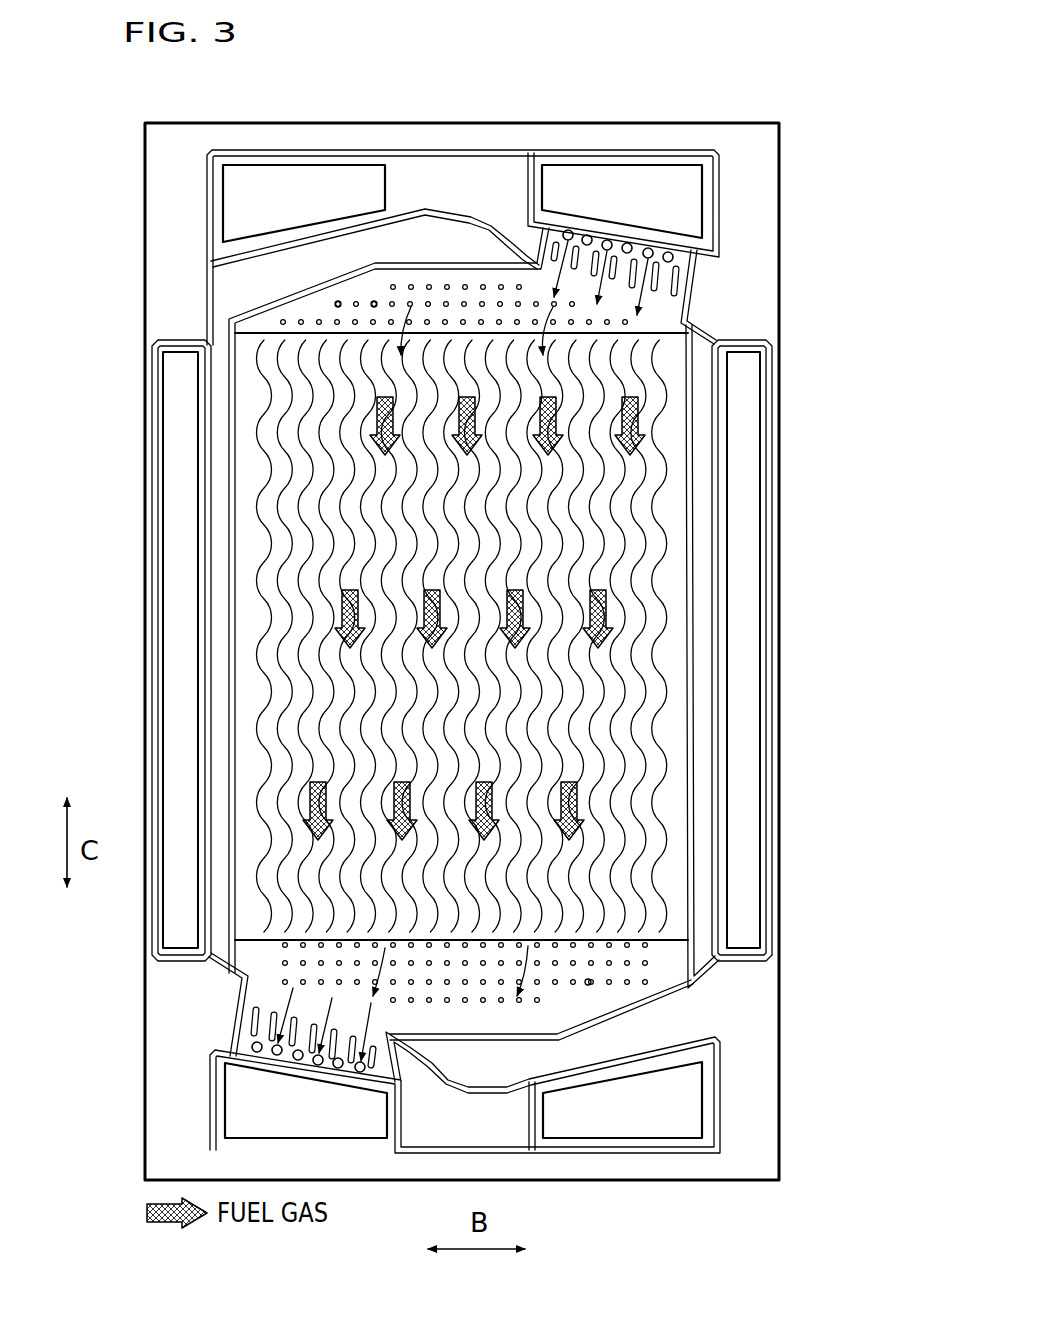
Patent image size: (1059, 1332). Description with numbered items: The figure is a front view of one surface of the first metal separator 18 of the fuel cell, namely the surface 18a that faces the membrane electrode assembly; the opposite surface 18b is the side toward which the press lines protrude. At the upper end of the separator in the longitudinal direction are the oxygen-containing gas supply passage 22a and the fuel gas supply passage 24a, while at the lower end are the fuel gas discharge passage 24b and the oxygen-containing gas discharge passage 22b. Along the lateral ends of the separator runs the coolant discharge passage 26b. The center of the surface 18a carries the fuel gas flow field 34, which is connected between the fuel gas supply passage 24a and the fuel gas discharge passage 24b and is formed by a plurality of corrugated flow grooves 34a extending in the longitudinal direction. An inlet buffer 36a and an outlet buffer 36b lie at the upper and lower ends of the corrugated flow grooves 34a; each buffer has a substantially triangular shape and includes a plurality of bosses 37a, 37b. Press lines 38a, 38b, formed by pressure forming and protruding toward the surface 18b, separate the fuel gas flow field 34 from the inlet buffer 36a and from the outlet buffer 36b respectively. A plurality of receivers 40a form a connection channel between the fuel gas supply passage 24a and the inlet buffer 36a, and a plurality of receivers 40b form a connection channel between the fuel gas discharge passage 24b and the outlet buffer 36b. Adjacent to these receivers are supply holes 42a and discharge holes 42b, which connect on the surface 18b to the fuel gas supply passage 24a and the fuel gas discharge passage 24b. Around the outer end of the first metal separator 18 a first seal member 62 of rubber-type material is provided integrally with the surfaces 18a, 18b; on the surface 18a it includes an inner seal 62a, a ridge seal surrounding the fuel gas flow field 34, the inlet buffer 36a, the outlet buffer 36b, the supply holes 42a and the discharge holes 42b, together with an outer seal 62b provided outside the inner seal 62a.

The first metal separator 18 is at (693, 63).
The surface 18a is at (743, 1083).
The surface 18b is at (742, 1120).
The oxygen-containing gas supply passage 22a is at (304, 203).
The oxygen-containing gas discharge passage 22b is at (622, 1100).
The fuel gas supply passage 24a is at (622, 201).
The fuel gas discharge passage 24b is at (306, 1101).
The coolant discharge passage 26b is at (183, 600).
The fuel gas flow field 34 is at (630, 580).
The corrugated flow grooves 34a is at (612, 857).
The inlet buffer 36a is at (438, 297).
The outlet buffer 36b is at (490, 1005).
The bosses 37a is at (373, 300).
The bosses 37b is at (588, 986).
The press line 38a is at (311, 332).
The press line 38b is at (617, 943).
The receivers 40a is at (680, 270).
The receivers 40b is at (248, 1036).
The supply holes 42a is at (607, 240).
The discharge holes 42b is at (358, 1073).
The first seal member 62 is at (786, 751).
The inner seal 62a is at (694, 575).
The outer seal 62b is at (778, 683).